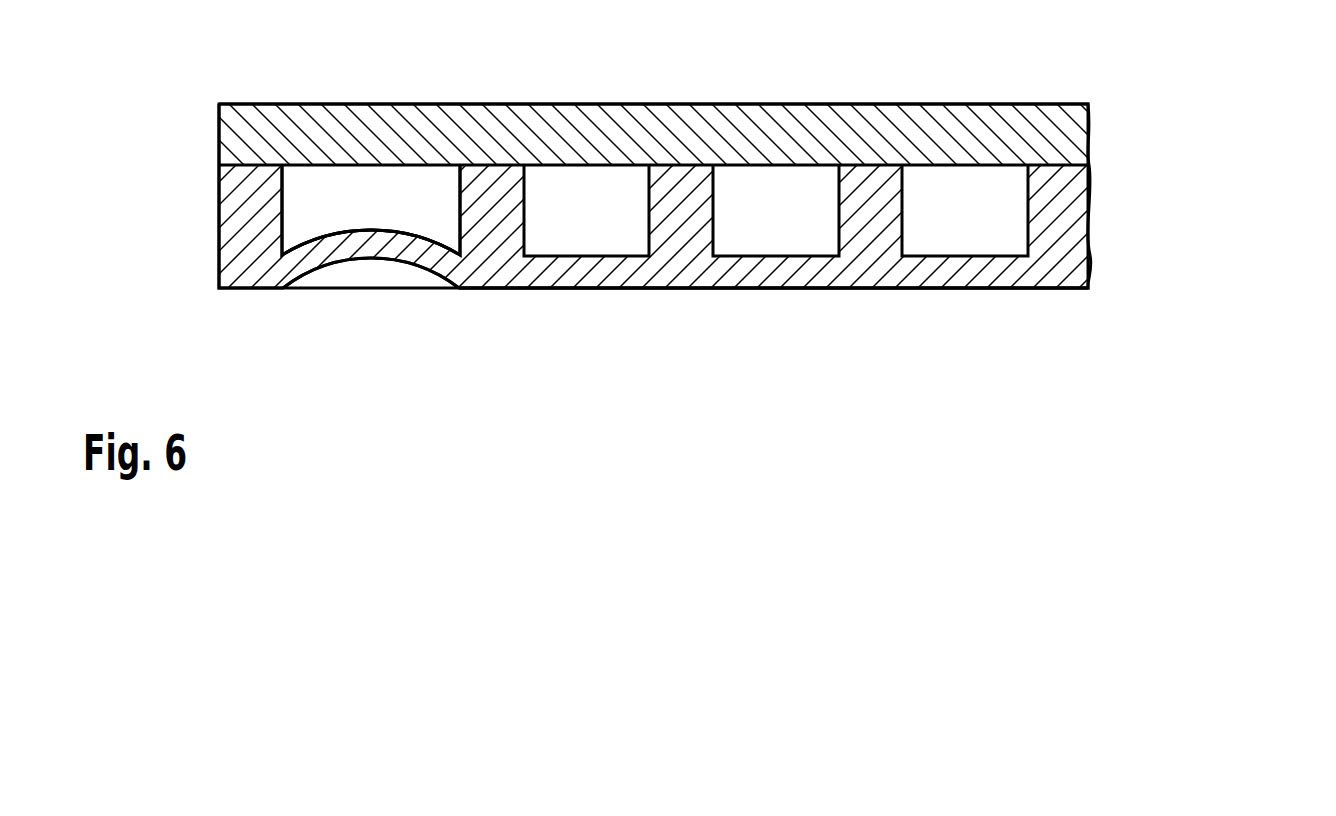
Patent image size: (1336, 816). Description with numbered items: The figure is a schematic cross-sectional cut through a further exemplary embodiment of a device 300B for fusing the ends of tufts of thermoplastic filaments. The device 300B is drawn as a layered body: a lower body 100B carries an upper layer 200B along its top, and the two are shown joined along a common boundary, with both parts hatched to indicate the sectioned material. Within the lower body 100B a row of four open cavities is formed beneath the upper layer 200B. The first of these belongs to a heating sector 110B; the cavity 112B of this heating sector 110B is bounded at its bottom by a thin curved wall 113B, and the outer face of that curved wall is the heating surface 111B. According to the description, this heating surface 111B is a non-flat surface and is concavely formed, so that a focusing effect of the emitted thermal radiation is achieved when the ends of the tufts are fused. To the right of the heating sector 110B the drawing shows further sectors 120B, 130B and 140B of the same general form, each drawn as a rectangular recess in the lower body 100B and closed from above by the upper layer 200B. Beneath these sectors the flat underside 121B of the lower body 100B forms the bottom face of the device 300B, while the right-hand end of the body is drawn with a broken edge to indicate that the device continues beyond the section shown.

The substrate (first layer) 100B is at (1073, 260).
The cover layer (second layer) 200B is at (1073, 133).
The device 300B is at (1168, 192).
The heating sector 110B is at (358, 198).
The chamber cavity 112B is at (410, 192).
The membrane 113B is at (332, 248).
The heating surface 111B is at (390, 262).
The second chamber 120B is at (583, 198).
The substrate bottom surface 121B is at (588, 290).
The third chamber 130B is at (773, 198).
The fourth chamber 140B is at (962, 198).